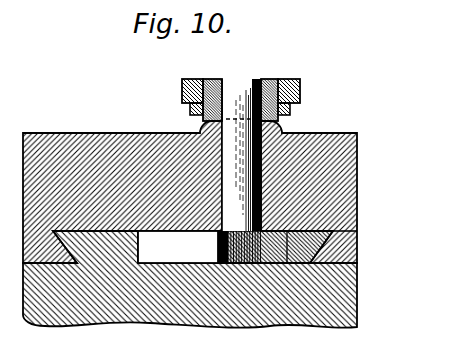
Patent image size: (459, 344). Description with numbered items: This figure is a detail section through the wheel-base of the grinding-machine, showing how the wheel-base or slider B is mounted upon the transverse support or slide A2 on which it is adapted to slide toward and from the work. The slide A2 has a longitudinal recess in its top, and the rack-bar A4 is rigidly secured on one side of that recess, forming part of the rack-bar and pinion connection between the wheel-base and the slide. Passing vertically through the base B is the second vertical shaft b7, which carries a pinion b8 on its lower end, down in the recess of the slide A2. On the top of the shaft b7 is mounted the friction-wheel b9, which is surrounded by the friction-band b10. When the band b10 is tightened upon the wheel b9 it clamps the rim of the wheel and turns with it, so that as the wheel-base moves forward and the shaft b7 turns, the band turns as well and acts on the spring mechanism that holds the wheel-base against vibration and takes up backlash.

The wheel-base or slider B is at (92, 147).
The transverse support or slide A2 is at (347, 288).
The rack-bar A4 is at (267, 240).
The second vertical shaft b7 is at (229, 156).
The pinion b8 is at (217, 246).
The friction-wheel b9 is at (266, 79).
The friction-band b10 is at (300, 90).